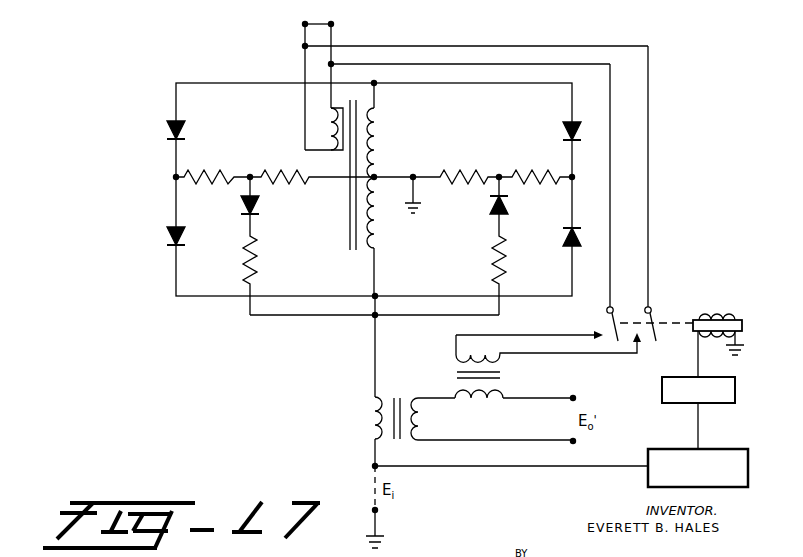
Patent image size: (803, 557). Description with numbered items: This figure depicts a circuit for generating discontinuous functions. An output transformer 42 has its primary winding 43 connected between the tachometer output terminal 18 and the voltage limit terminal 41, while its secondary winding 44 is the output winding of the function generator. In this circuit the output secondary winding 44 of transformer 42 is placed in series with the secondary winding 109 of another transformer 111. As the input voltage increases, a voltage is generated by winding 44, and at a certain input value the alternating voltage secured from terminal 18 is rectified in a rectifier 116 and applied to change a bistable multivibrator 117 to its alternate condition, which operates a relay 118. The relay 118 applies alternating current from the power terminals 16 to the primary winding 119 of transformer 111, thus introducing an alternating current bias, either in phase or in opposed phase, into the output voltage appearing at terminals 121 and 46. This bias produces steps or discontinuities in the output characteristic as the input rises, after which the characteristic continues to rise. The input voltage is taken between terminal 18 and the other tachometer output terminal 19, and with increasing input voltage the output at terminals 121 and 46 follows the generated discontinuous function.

The power terminals 16 is at (331, 24).
The voltage limit terminal 41 is at (373, 318).
The output transformer 42 is at (397, 395).
The primary winding 43 is at (377, 424).
The secondary winding 44 is at (416, 428).
The tachometer output terminal 18 is at (374, 465).
The tachometer output terminal 19 is at (377, 511).
The output terminal 46 is at (575, 443).
The output terminal 121 is at (573, 395).
The primary winding 119 is at (459, 358).
The transformer 111 is at (499, 372).
The secondary winding 109 is at (483, 394).
The rectifier 116 is at (647, 478).
The bistable multivibrator 117 is at (712, 404).
The relay 118 is at (712, 318).